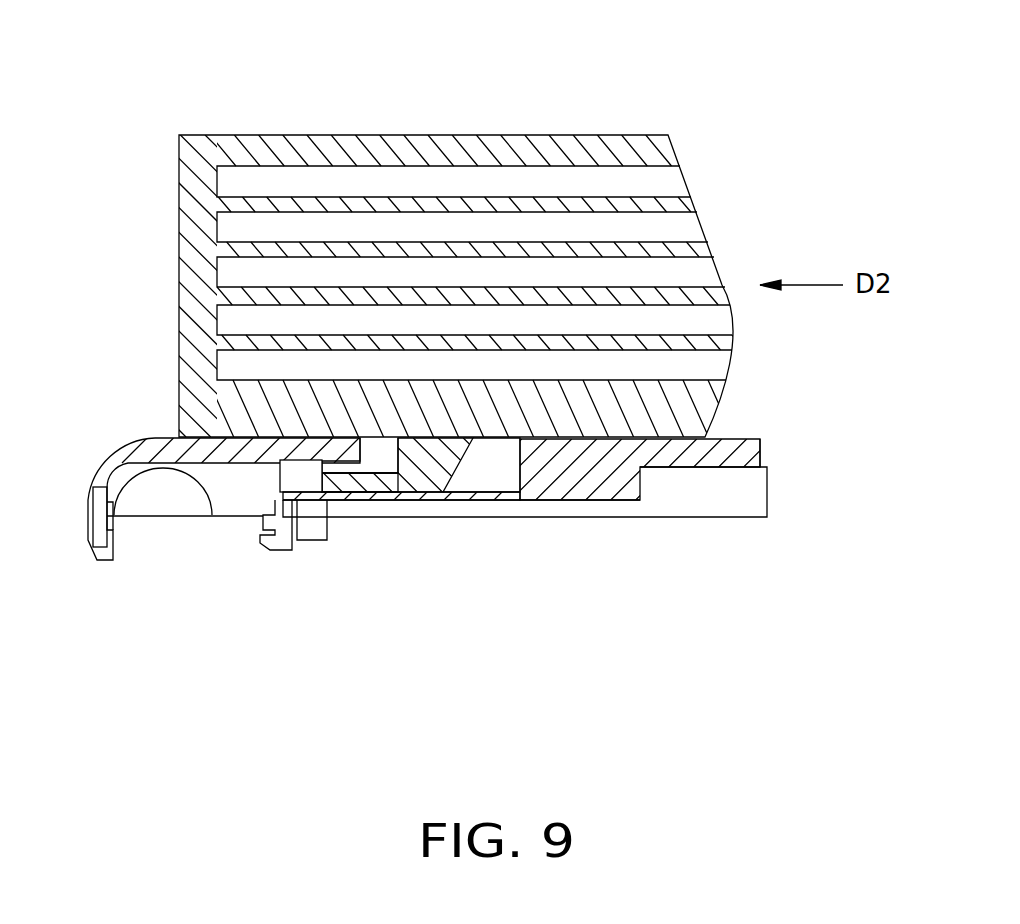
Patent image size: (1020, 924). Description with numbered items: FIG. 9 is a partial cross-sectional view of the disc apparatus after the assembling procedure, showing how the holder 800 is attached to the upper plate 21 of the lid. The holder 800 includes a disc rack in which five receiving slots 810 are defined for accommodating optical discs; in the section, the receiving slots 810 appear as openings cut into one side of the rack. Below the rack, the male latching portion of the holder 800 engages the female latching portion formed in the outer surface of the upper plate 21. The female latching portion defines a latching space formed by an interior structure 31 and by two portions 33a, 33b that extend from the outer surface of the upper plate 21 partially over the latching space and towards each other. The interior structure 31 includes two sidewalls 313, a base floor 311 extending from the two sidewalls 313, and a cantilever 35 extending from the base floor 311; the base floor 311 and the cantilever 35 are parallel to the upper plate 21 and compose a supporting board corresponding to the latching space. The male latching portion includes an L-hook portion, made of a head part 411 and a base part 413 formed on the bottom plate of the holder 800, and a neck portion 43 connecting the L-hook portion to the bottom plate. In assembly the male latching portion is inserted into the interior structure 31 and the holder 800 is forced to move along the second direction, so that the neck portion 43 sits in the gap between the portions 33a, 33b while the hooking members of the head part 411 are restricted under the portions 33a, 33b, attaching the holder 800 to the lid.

The holder 800 is at (408, 245).
The receiving slots 810 is at (657, 189).
The base part 413 is at (554, 496).
The head part 411 is at (373, 482).
The neck portion 43 is at (368, 460).
The portion 33a is at (210, 547).
The portion 33b is at (121, 499).
The cantilever 35 is at (310, 492).
The interior structure 31 is at (540, 561).
The base floor 311 is at (482, 495).
The sidewalls 313 is at (540, 458).
The upper plate 21 is at (748, 452).